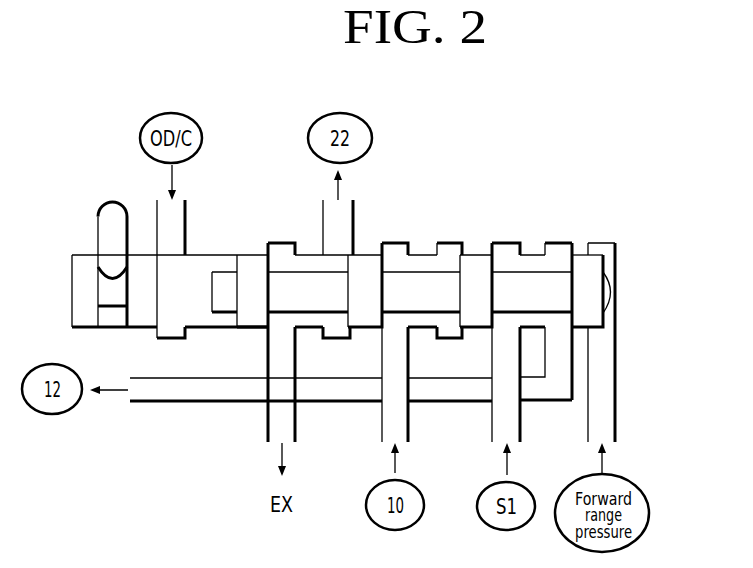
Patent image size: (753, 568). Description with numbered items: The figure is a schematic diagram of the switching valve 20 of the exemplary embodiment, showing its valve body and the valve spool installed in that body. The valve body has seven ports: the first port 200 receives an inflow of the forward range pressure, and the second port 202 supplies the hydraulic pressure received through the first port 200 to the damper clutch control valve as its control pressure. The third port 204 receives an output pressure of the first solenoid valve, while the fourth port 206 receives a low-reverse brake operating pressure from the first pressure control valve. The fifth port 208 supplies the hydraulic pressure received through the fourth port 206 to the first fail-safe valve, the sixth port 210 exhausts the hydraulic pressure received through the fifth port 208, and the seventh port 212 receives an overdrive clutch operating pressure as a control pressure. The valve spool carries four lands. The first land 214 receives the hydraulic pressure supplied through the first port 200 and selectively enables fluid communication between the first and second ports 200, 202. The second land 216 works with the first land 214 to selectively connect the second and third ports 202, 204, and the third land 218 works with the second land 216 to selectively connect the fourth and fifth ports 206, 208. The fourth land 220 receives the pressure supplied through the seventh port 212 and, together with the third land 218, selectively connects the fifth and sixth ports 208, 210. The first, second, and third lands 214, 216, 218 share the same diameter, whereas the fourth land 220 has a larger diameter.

The switching valve 20 is at (670, 290).
The first port 200 is at (605, 337).
The second port 202 is at (562, 333).
The third port 204 is at (500, 337).
The fourth port 206 is at (395, 337).
The fifth port 208 is at (337, 248).
The sixth port 210 is at (272, 338).
The seventh port 212 is at (172, 245).
The first land 214 is at (587, 265).
The second land 216 is at (473, 270).
The third land 218 is at (370, 267).
The fourth land 220 is at (250, 268).